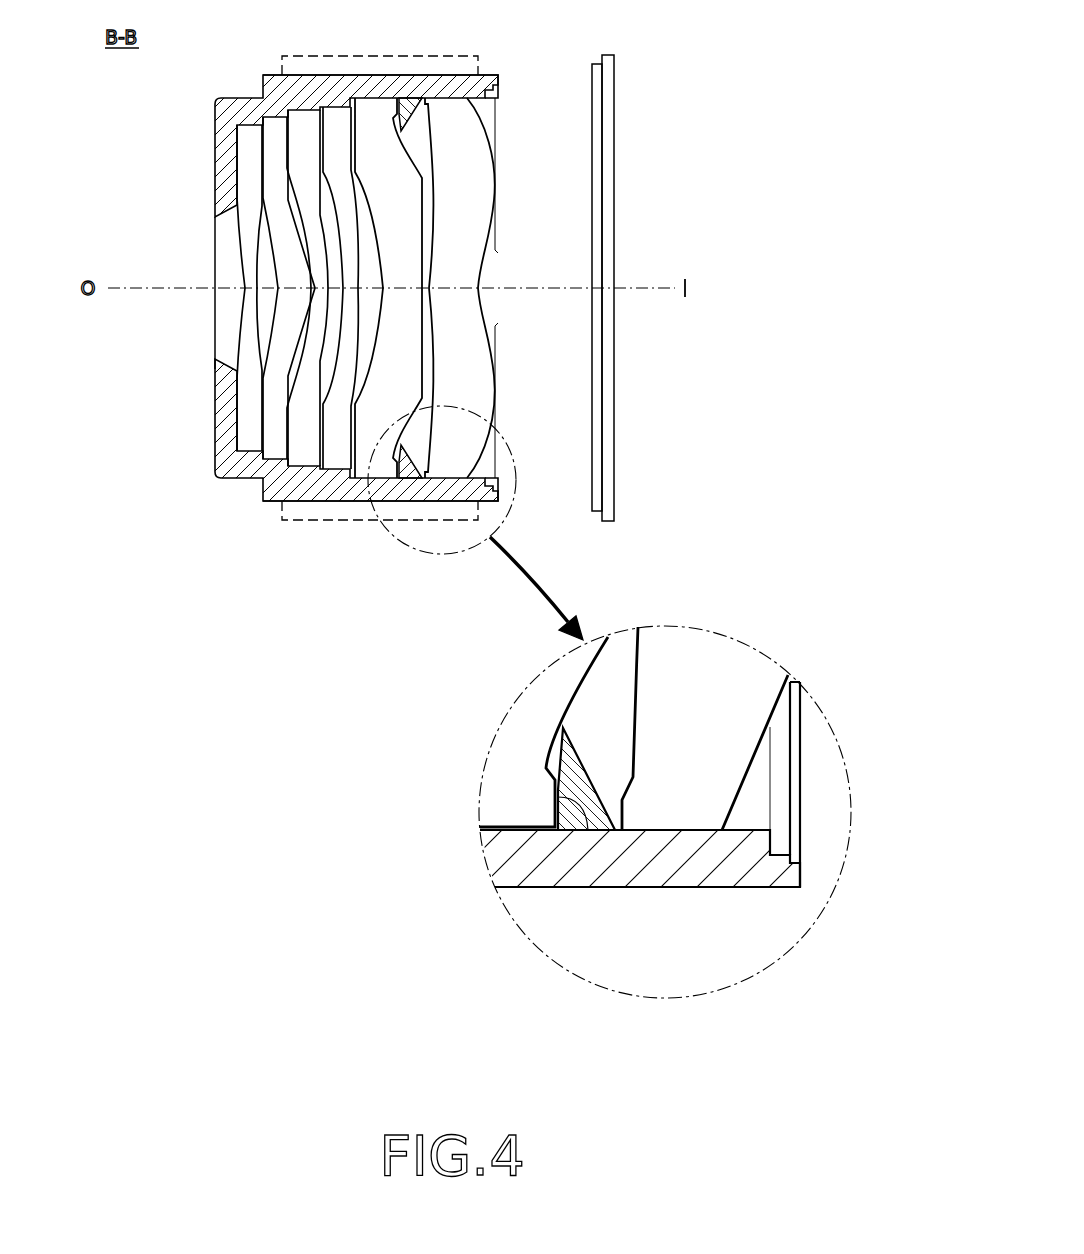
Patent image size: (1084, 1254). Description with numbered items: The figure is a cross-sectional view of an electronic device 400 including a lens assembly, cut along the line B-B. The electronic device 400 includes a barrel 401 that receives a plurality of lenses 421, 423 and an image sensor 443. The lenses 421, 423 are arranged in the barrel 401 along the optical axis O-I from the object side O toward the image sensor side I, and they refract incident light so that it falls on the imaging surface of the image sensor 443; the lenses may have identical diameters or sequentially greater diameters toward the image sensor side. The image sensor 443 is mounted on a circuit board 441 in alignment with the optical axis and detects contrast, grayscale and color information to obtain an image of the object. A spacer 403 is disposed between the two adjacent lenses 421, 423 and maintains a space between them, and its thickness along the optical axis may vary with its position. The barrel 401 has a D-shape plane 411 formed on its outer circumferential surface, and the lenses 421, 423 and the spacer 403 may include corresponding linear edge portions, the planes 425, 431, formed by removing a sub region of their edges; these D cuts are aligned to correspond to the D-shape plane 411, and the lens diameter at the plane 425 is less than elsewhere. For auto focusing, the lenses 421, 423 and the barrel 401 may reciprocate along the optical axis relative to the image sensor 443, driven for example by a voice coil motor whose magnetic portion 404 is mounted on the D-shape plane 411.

The electronic device 400 is at (680, 50).
The barrel 401 is at (222, 153).
The spacer 403 is at (402, 480).
The magnetic portion 404 is at (378, 56).
The D-shape plane 411 is at (270, 75).
The lens 421 is at (400, 333).
The lens 423 is at (462, 333).
The plane 425 is at (683, 827).
The plane 431 is at (553, 800).
The circuit board 441 is at (607, 181).
The image sensor 443 is at (573, 405).